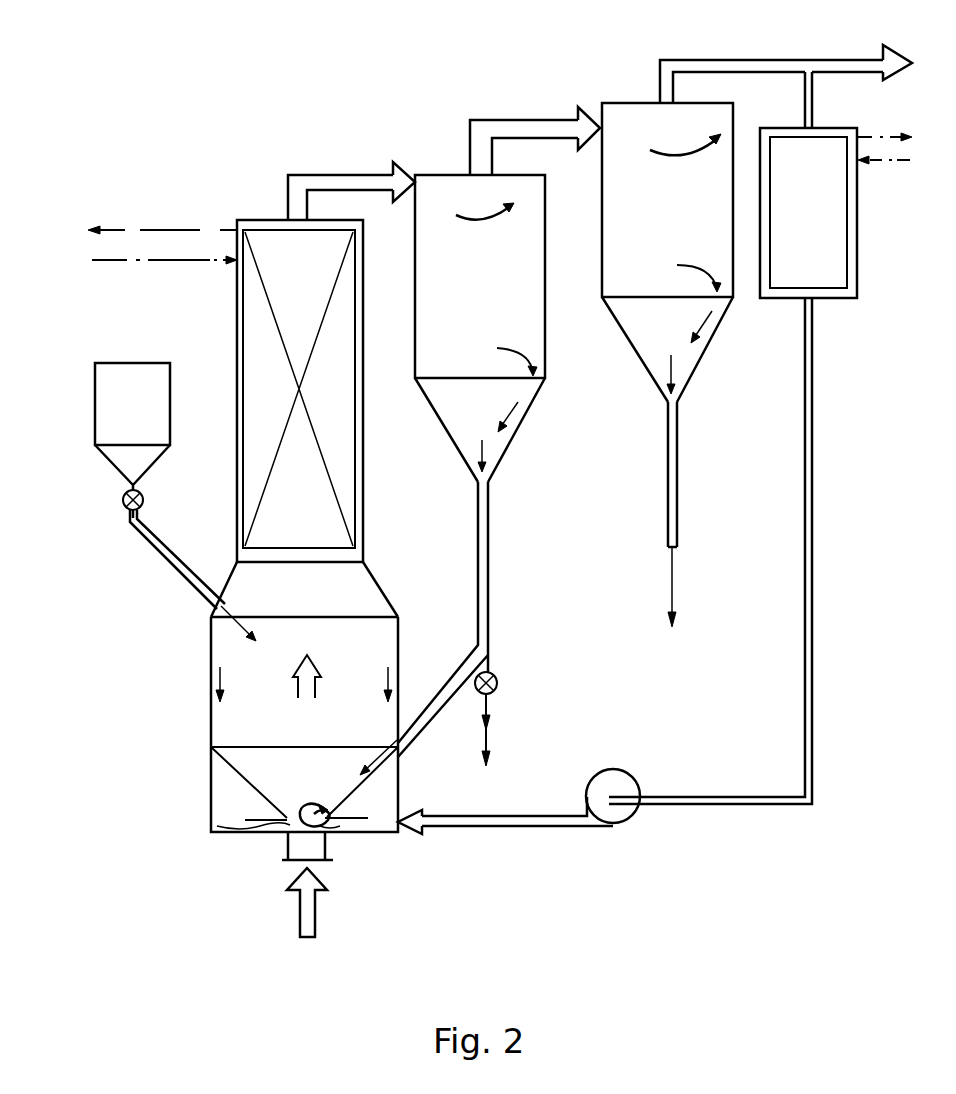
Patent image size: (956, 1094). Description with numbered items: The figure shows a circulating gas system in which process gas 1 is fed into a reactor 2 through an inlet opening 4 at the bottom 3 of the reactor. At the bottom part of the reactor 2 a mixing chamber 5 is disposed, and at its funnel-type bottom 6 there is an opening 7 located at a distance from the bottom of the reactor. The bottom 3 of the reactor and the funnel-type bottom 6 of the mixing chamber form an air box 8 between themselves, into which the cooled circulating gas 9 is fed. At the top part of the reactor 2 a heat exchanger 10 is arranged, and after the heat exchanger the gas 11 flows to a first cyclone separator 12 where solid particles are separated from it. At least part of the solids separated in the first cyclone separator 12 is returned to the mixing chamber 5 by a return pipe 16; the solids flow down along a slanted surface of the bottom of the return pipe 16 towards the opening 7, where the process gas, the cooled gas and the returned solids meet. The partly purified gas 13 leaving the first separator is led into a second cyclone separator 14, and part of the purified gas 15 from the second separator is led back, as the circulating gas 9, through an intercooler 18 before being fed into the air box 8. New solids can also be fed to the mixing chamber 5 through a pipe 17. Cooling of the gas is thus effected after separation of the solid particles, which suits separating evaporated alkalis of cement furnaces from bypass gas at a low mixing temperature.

The process gas 1 is at (317, 917).
The reactor 2 is at (395, 574).
The bottom of the reactor 3 is at (238, 834).
The inlet opening 4 is at (314, 853).
The mixing chamber 5 is at (225, 717).
The funnel-type bottom 6 is at (230, 766).
The opening 7 is at (218, 825).
The air box 8 is at (230, 797).
The circulating gas 9 is at (507, 827).
The heat exchanger 10 is at (256, 323).
The gas 11 is at (338, 180).
The first cyclone separator 12 is at (530, 320).
The partly purified gas 13 is at (535, 122).
The second cyclone separator 14 is at (609, 226).
The purified gas 15 is at (752, 60).
The return pipe 16 is at (431, 708).
The pipe 17 is at (157, 552).
The intercooler 18 is at (843, 215).